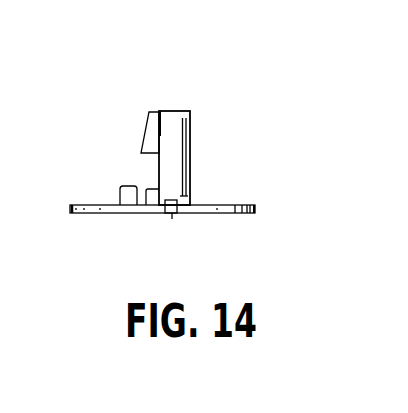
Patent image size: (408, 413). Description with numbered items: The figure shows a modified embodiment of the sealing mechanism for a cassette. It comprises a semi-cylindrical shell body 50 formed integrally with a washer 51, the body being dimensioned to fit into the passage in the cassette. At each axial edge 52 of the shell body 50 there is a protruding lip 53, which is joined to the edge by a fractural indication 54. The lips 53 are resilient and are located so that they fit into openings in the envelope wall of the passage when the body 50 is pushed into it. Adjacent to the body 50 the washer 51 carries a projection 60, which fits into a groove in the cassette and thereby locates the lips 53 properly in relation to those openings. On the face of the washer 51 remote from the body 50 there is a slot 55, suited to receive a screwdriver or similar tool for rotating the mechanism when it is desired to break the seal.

The semi-cylindrical shell body 50 is at (192, 147).
The washer 51 is at (224, 208).
The axial edge 52 is at (158, 173).
The protruding lip 53 is at (145, 133).
The fractural indication 54 is at (158, 111).
The slot 55 is at (175, 220).
The projection 60 is at (127, 195).